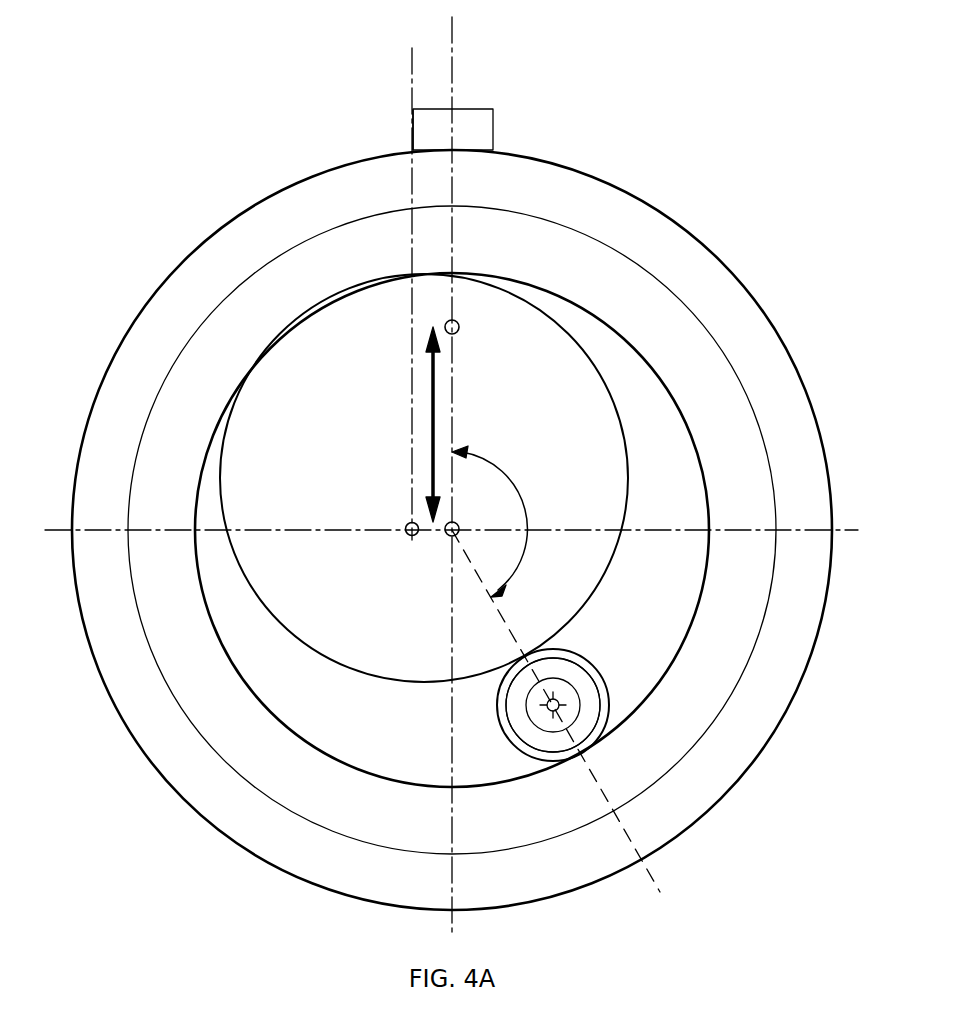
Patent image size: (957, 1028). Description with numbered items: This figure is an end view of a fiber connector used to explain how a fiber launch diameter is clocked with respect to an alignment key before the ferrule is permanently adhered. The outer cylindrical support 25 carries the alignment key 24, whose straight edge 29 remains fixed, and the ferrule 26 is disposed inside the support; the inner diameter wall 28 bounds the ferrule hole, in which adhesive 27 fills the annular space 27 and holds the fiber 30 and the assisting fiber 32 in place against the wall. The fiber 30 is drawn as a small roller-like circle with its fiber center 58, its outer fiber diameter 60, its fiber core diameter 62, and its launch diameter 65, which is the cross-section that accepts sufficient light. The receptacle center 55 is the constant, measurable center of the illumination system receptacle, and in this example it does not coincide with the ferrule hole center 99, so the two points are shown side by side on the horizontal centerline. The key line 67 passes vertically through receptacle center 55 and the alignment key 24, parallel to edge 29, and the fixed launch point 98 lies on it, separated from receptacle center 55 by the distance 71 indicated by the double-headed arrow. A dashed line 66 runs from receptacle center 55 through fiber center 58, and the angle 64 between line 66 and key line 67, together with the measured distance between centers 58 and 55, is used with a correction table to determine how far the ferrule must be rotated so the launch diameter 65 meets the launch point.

The alignment key 24 is at (468, 109).
The cylindrical support 25 is at (598, 178).
The ferrule 26 is at (641, 267).
The adhesive 27 is at (634, 618).
The inner diameter wall 28 is at (575, 302).
The edge of alignment key 29 is at (412, 128).
The fiber 30 is at (610, 704).
The assisting fiber 32 is at (330, 655).
The receptacle center 55 is at (458, 523).
The fiber center 58 is at (537, 722).
The fiber diameter 60 is at (553, 762).
The fiber core diameter 62 is at (566, 658).
The fiber launch diameter 65 is at (577, 687).
The angle 64 is at (531, 512).
The line 66 is at (658, 878).
The key line 67 is at (453, 42).
The distance 71 is at (428, 428).
The fixed launch point 98 is at (459, 331).
The ferrule hole center 99 is at (407, 536).